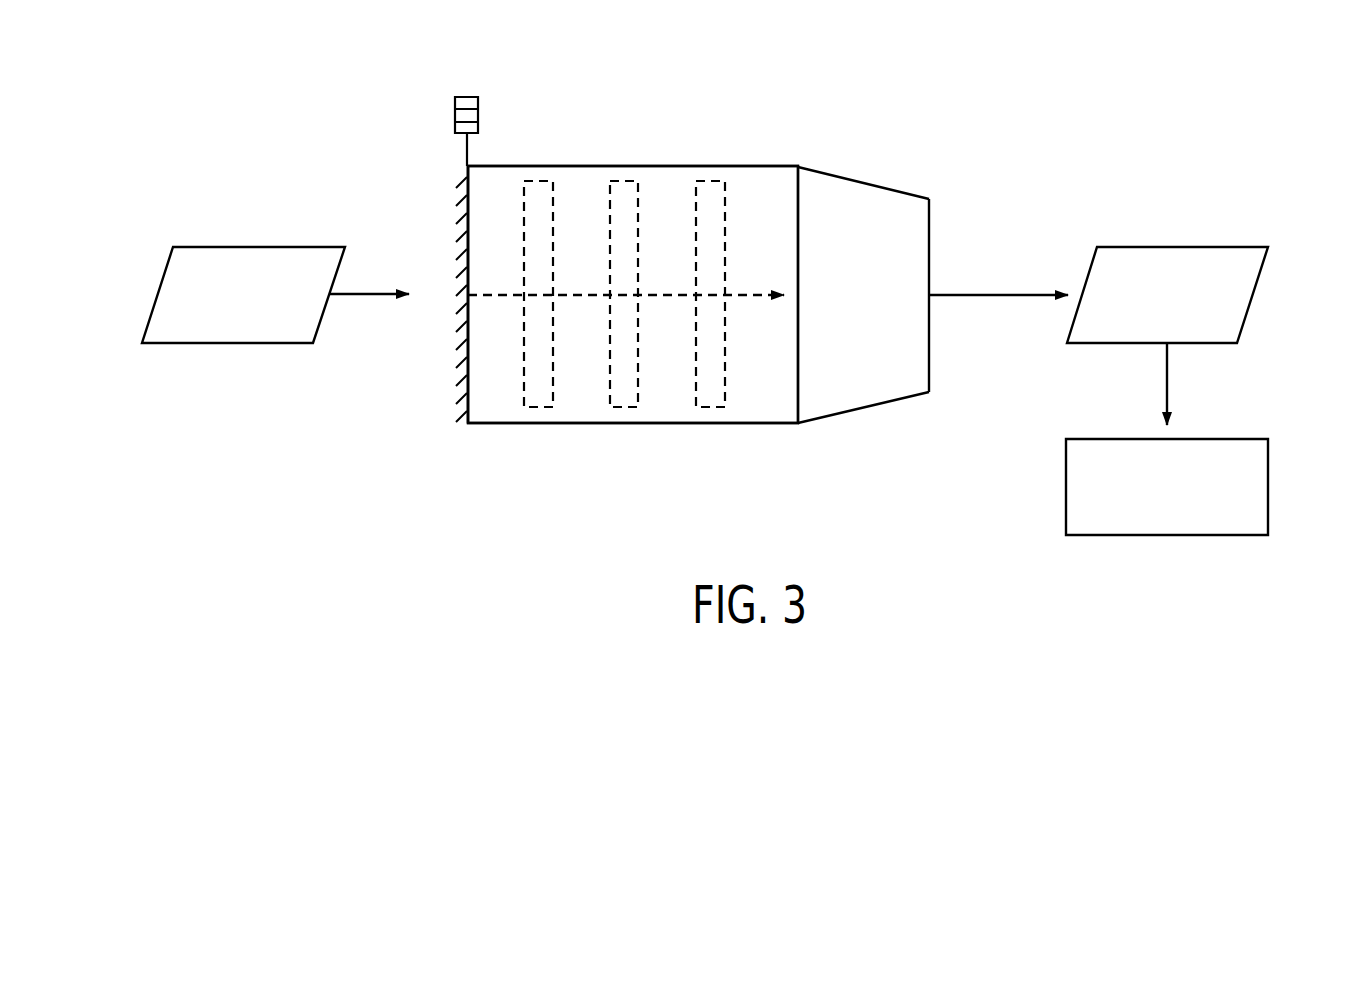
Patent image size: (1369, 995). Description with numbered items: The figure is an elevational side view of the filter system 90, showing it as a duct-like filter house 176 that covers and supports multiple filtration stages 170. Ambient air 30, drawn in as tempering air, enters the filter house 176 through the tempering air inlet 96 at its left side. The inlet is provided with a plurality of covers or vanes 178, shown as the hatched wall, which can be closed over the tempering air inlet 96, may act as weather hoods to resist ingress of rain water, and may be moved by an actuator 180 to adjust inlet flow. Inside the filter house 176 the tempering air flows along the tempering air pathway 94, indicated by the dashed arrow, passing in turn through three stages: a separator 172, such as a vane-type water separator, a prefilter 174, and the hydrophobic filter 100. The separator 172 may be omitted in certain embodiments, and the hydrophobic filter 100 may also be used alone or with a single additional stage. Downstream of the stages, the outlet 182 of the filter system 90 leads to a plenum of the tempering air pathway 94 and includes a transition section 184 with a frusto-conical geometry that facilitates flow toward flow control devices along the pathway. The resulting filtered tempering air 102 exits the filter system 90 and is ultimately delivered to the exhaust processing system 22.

The exhaust processing system 22 is at (1268, 488).
The ambient air 30 is at (158, 296).
The filter system 90 is at (686, 148).
The tempering air pathway 94 is at (758, 293).
The tempering air inlet 96 is at (452, 433).
The hydrophobic filter 100 is at (712, 408).
The filtered tempering air 102 is at (1255, 290).
The multiple filtration stages 170 is at (551, 150).
The separator 172 is at (540, 408).
The prefilter 174 is at (625, 408).
The filter house 176 is at (776, 165).
The covers or vanes 178 is at (446, 169).
The actuator 180 is at (468, 97).
The outlet 182 is at (951, 169).
The transition section 184 is at (866, 409).